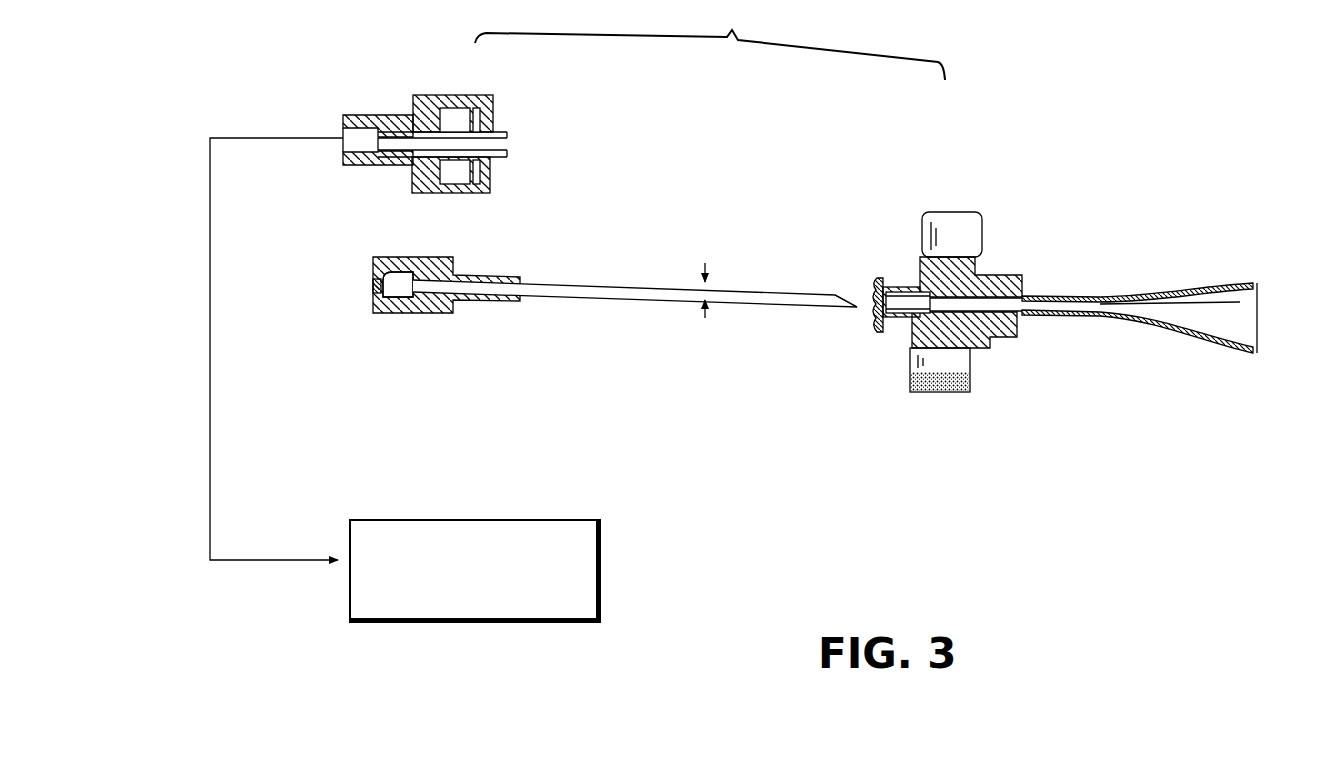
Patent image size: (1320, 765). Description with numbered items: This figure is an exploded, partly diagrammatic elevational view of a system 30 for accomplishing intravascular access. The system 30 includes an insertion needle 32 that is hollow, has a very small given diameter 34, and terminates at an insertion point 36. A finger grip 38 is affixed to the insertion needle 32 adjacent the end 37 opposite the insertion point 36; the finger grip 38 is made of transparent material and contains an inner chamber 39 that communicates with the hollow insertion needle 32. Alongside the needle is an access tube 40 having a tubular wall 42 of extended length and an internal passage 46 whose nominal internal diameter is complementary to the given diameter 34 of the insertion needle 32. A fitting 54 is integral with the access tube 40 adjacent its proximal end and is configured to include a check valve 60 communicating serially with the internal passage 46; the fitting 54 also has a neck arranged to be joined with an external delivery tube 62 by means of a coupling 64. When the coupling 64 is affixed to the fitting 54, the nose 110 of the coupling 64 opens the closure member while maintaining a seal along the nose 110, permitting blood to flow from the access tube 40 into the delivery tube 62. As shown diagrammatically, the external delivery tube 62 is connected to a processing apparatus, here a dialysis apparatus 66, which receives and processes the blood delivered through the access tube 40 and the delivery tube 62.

The system 30 is at (774, 182).
The insertion needle 32 is at (626, 284).
The given diameter 34 is at (705, 318).
The insertion point 36 is at (852, 311).
The end 37 is at (405, 285).
The finger grip 38 is at (406, 294).
The inner chamber 39 is at (342, 315).
The access tube 40 is at (1139, 318).
The tubular wall 42 is at (1142, 342).
The internal passage 46 is at (1043, 308).
The fitting 54 is at (946, 308).
The check valve 60 is at (872, 279).
The external delivery tube 62 is at (375, 168).
The coupling 64 is at (452, 193).
The dialysis apparatus 66 is at (467, 520).
The nose 110 is at (497, 132).